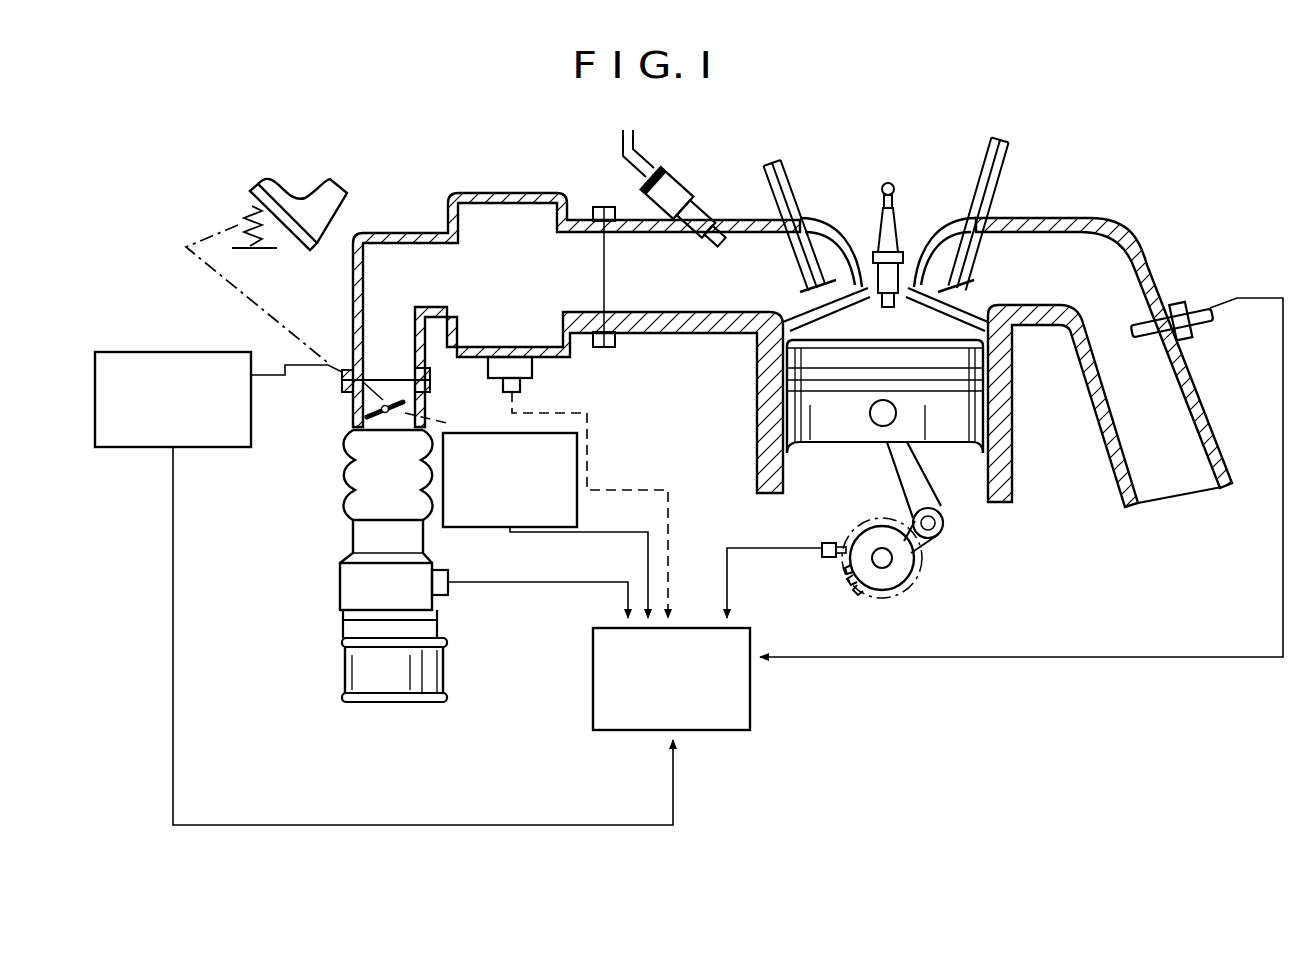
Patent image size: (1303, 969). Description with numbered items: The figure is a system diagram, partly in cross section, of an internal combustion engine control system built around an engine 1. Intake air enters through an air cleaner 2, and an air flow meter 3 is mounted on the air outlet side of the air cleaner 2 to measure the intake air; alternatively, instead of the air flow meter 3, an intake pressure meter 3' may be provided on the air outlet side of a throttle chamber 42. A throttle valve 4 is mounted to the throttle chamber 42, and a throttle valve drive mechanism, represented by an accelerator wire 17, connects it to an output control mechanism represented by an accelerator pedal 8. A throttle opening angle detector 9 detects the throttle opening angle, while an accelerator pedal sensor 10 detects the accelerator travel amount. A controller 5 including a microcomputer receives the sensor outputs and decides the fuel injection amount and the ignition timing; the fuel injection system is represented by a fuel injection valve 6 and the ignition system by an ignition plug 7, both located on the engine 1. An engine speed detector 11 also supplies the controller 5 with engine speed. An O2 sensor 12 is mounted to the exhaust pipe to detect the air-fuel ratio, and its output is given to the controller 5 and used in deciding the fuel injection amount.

The engine 1 is at (1000, 505).
The air cleaner 2 is at (447, 665).
The air flow meter 3 is at (422, 578).
The intake pressure meter 3' is at (538, 375).
The throttle valve 4 is at (352, 408).
The controller 5 is at (752, 705).
The fuel injection valve 6 is at (690, 192).
The ignition plug 7 is at (879, 232).
The accelerator pedal 8 is at (255, 185).
The throttle opening angle detector 9 is at (577, 512).
The accelerator pedal sensor 10 is at (224, 447).
The engine speed detector 11 is at (903, 590).
The O2 sensor 12 is at (1200, 305).
The accelerator wire 17 is at (220, 293).
The throttle chamber 42 is at (428, 397).